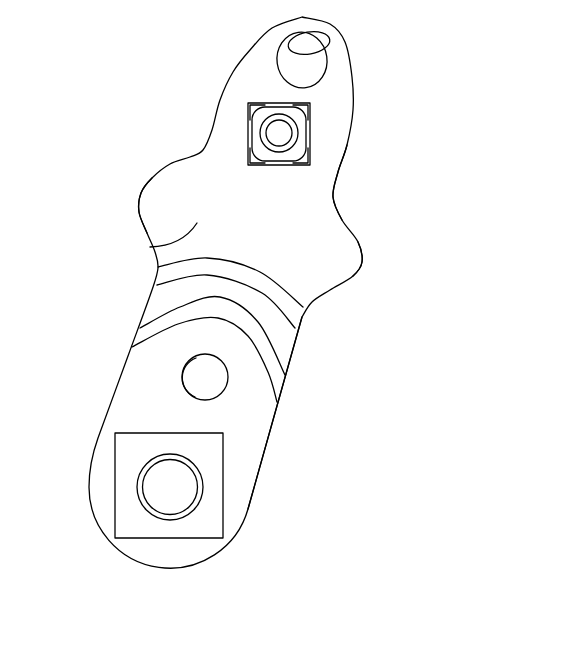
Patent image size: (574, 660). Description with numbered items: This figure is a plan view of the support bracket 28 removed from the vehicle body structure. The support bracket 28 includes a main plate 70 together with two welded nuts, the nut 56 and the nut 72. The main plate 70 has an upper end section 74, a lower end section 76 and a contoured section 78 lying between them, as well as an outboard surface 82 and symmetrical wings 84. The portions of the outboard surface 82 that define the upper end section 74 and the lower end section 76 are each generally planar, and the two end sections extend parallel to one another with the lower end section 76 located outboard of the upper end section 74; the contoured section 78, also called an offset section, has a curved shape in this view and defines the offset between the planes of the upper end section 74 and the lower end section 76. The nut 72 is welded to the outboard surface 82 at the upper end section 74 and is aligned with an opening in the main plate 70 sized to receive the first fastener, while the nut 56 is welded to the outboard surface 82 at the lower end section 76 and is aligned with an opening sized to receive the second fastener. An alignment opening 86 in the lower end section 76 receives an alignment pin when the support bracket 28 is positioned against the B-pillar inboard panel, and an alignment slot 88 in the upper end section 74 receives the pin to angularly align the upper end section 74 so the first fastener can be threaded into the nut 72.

The support bracket 28 is at (406, 96).
The nut 56 is at (207, 515).
The main plate 70 is at (267, 57).
The nut 72 is at (266, 133).
The upper end section 74 is at (310, 192).
The lower end section 76 is at (247, 408).
The contoured section 78 is at (250, 300).
The outboard surface 82 is at (157, 243).
The symmetrical wings 84 is at (143, 192).
The alignment opening 86 is at (192, 390).
The alignment slot 88 is at (328, 48).